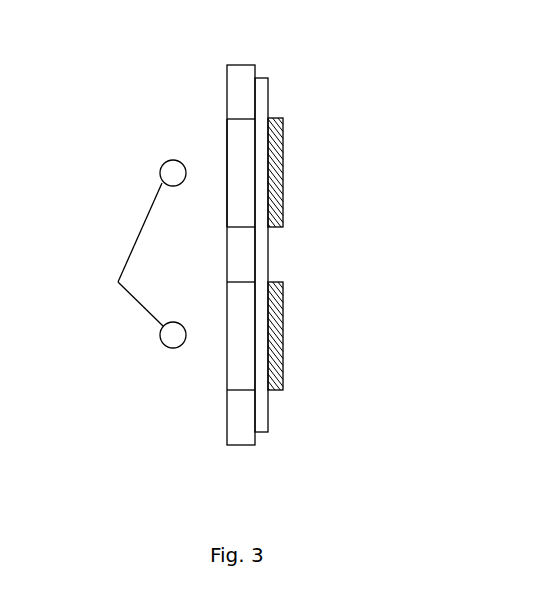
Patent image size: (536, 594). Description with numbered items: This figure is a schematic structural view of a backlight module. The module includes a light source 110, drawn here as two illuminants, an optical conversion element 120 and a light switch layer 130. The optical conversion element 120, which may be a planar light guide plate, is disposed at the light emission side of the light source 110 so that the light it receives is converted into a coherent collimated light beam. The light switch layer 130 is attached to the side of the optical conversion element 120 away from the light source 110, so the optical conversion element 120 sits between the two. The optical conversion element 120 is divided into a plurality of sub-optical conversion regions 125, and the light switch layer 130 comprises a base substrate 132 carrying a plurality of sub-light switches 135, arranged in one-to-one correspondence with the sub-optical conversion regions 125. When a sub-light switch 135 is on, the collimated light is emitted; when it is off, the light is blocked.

The light source 110 is at (136, 254).
The optical conversion element 120 is at (278, 225).
The sub-optical conversion region 125 is at (201, 116).
The light switch layer 130 is at (319, 297).
The base substrate 132 is at (292, 297).
The sub-light switch 135 is at (307, 304).